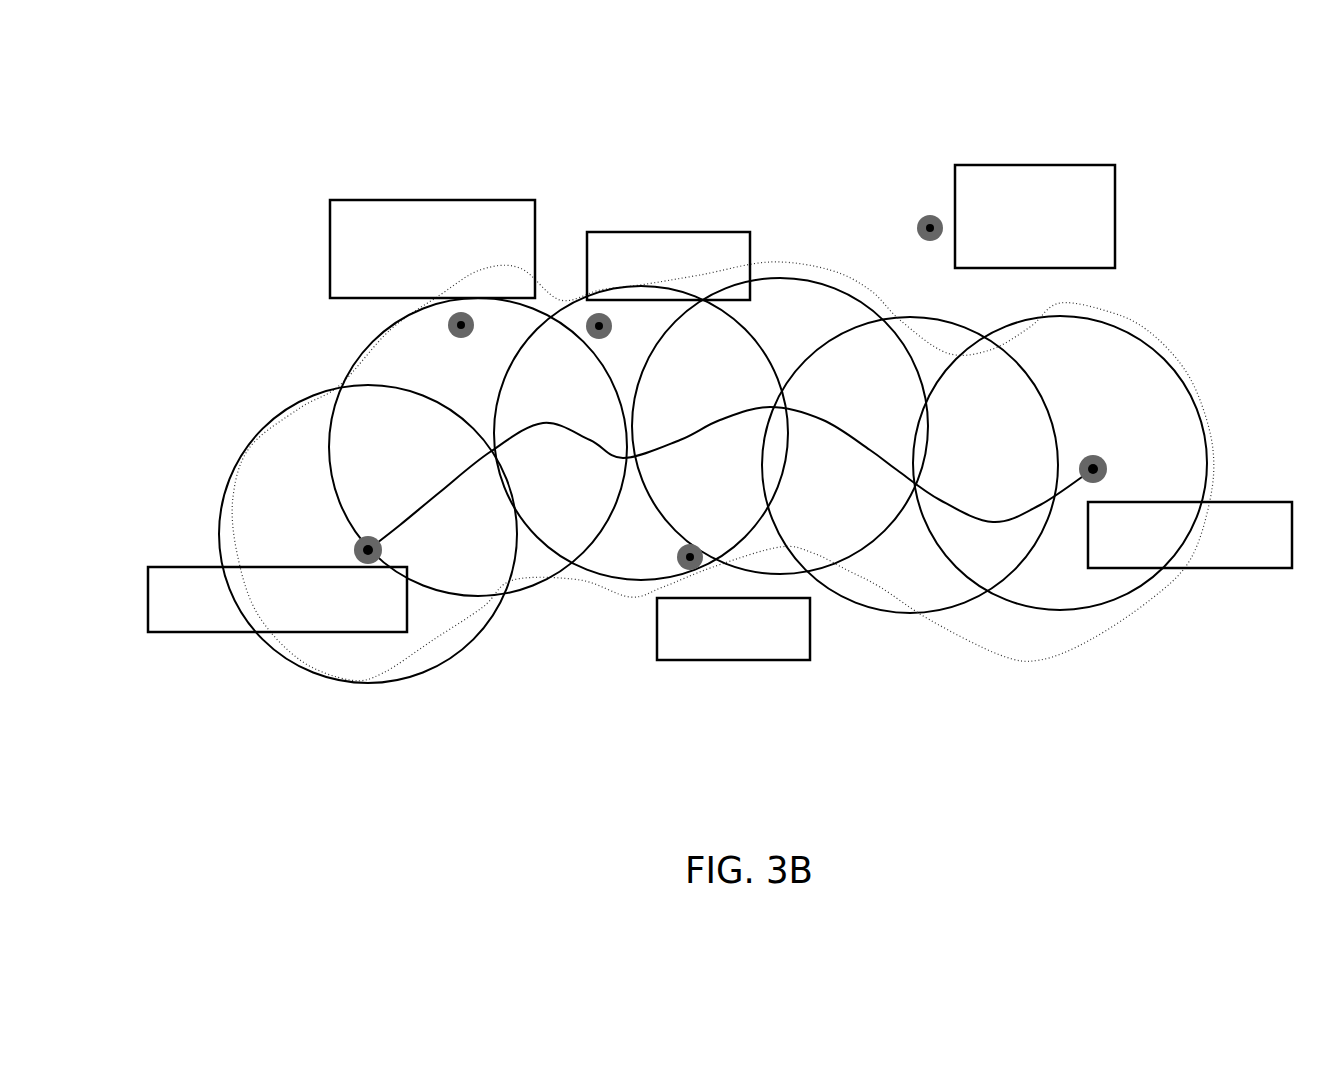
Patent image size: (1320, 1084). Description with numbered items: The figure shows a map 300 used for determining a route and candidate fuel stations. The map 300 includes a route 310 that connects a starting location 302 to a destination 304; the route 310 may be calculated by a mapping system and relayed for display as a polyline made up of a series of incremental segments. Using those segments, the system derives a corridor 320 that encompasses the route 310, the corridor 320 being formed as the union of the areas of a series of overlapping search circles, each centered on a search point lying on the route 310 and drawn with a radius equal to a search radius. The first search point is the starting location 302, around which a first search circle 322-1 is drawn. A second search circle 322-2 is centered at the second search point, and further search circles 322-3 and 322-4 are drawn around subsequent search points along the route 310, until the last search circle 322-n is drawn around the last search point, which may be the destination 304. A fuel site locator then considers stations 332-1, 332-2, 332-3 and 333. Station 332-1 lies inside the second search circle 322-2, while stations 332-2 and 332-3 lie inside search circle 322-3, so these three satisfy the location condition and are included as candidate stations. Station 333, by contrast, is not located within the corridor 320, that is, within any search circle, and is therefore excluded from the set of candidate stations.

The map 300 is at (1173, 163).
The starting location 302 is at (362, 548).
The destination 304 is at (1100, 463).
The route 310 is at (827, 420).
The corridor 320 is at (1160, 338).
The first search circle 322-1 is at (255, 443).
The second search circle 322-2 is at (373, 339).
The search circle 322-3 is at (510, 366).
The search circle 322-4 is at (848, 293).
The last search circle 322-n is at (1200, 420).
The station 332-1 is at (462, 322).
The station 332-2 is at (601, 322).
The station 332-3 is at (700, 567).
The station 333 is at (930, 225).